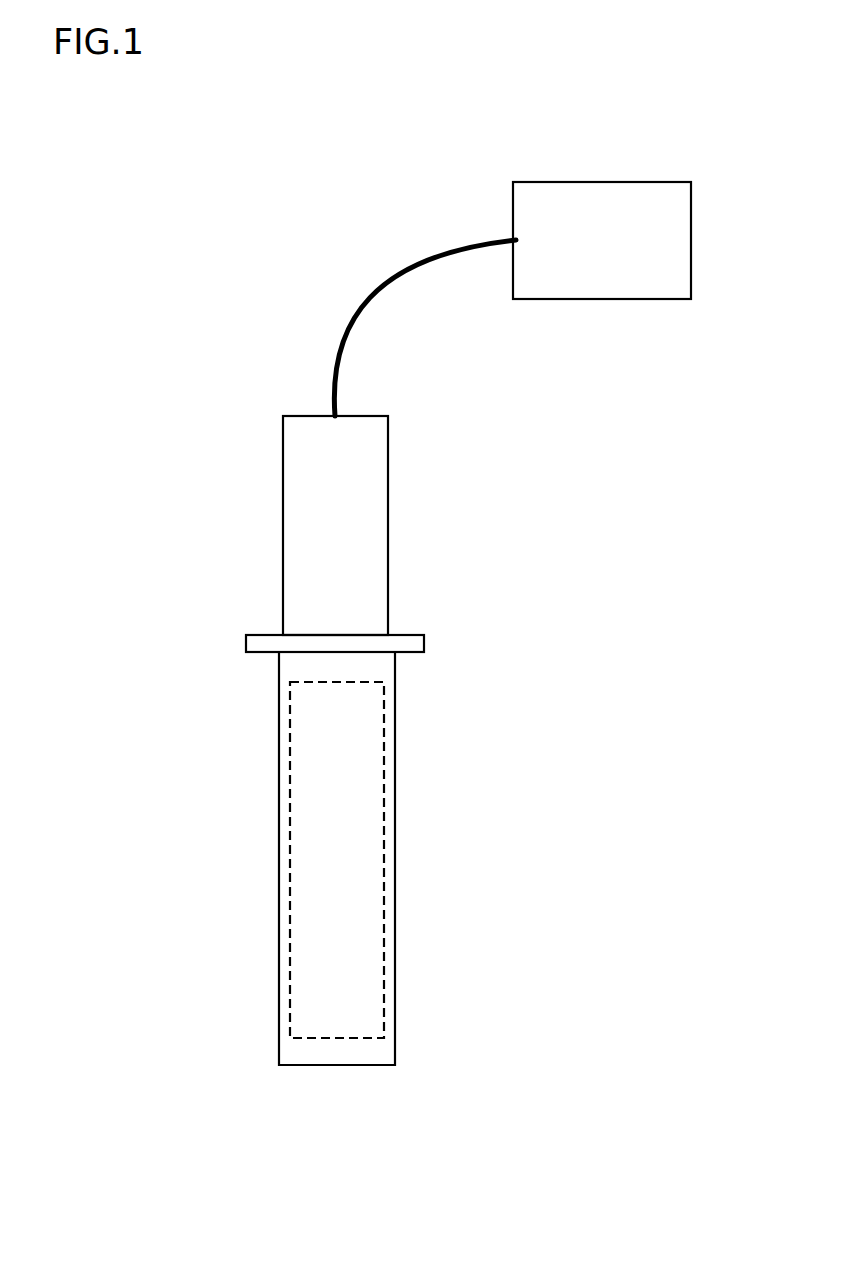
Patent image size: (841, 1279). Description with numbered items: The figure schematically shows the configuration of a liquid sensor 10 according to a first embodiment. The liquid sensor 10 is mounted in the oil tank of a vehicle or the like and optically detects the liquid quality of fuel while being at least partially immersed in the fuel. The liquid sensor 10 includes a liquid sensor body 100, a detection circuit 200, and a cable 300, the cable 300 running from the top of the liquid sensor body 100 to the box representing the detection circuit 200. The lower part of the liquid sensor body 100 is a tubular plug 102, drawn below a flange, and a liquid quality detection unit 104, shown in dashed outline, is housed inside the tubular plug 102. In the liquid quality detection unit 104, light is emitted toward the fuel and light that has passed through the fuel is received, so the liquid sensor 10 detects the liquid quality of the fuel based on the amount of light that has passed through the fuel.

The liquid sensor 10 is at (336, 1128).
The liquid sensor body 100 is at (401, 508).
The tubular plug 102 is at (279, 747).
The liquid quality detection unit 104 is at (383, 793).
The detection circuit 200 is at (637, 299).
The cable 300 is at (375, 289).